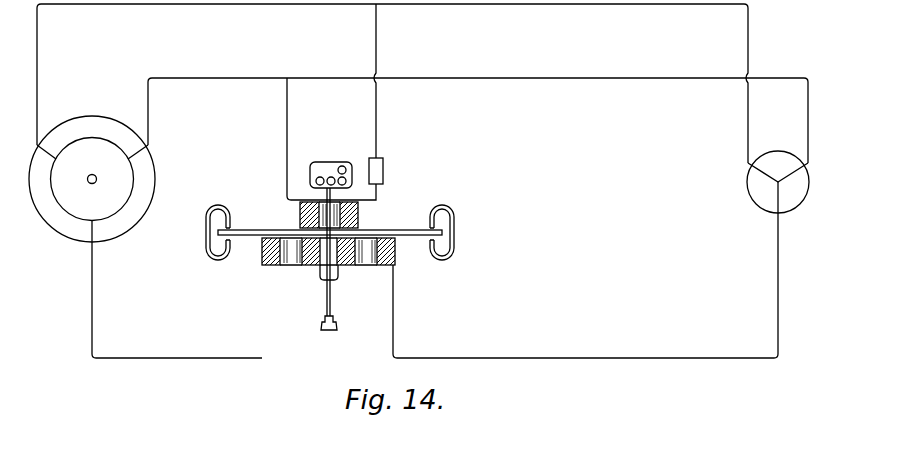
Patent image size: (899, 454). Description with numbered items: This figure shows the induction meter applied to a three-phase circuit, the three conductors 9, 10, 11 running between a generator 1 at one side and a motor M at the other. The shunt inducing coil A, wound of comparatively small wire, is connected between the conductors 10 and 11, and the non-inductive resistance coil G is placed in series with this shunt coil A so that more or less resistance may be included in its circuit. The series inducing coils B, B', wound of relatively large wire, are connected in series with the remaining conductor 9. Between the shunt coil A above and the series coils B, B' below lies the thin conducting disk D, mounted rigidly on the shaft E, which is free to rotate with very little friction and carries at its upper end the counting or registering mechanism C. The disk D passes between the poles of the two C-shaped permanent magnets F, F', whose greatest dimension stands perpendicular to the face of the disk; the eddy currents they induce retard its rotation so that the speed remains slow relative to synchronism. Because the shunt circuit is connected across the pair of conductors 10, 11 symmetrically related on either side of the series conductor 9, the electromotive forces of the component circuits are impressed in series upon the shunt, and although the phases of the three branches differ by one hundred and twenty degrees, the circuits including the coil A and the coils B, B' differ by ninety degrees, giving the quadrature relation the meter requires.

The generator/dynamo 1 is at (92, 168).
The conductor 9 is at (172, 360).
The conductor 10 is at (253, 7).
The conductor 11 is at (217, 80).
The inducing coil A is at (300, 212).
The inducing coil B is at (280, 251).
The inducing coil B' is at (376, 251).
The counting or registering mechanism C is at (329, 162).
The disk D is at (389, 230).
The shaft E is at (332, 301).
The permanent magnet F is at (216, 224).
The permanent magnet F' is at (451, 232).
The non-inductive resistance coil G is at (383, 168).
The motor M is at (778, 197).